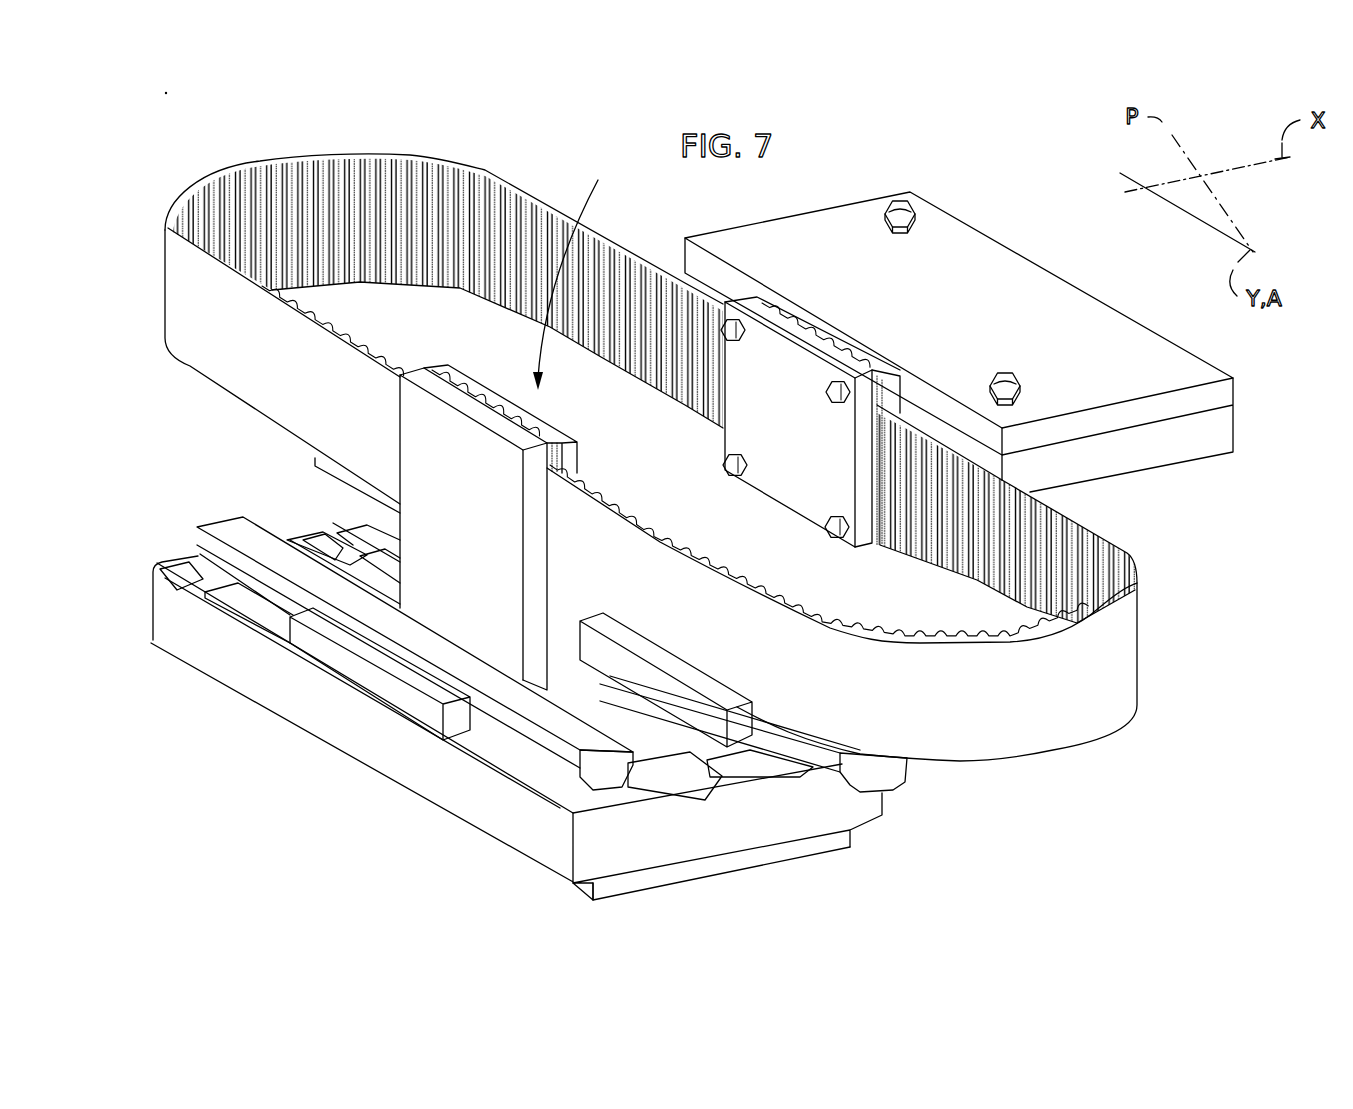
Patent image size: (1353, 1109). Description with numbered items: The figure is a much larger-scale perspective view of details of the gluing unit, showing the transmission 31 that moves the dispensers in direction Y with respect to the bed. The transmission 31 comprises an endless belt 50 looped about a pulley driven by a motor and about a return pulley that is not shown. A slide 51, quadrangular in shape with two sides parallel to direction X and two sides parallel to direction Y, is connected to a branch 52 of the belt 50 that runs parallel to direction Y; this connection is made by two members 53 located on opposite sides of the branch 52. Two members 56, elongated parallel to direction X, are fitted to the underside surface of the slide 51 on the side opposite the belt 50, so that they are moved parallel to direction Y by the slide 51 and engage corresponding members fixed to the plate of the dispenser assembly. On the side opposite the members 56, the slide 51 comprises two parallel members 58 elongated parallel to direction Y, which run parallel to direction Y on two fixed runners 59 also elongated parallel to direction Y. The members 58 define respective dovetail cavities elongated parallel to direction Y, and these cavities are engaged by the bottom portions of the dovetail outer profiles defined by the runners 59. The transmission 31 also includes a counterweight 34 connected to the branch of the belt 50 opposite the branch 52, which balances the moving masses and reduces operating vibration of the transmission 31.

The transmission 31 is at (576, 268).
The counterweight 34 is at (978, 305).
The endless belt 50 is at (225, 347).
The slide 51 is at (790, 800).
The branch 52 is at (610, 555).
The members 53 is at (570, 456).
The members 56 is at (715, 866).
The parallel members 58 is at (363, 682).
The fixed runners 59 is at (517, 747).